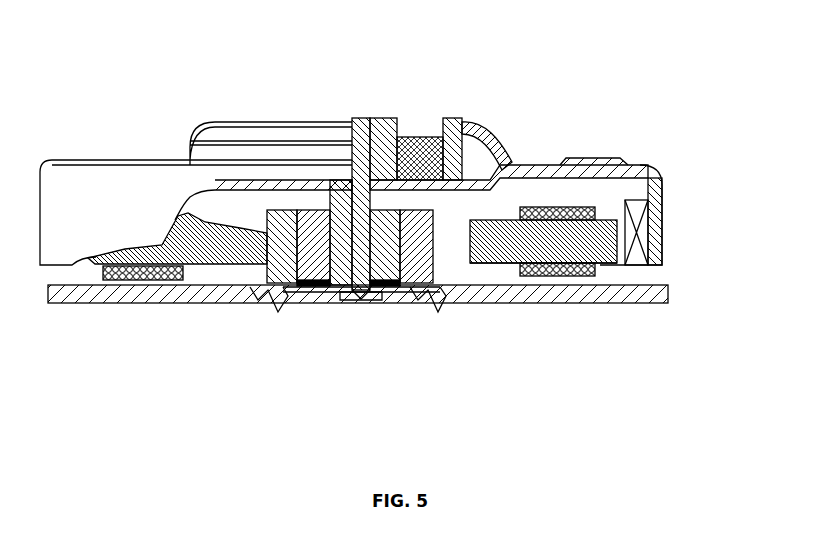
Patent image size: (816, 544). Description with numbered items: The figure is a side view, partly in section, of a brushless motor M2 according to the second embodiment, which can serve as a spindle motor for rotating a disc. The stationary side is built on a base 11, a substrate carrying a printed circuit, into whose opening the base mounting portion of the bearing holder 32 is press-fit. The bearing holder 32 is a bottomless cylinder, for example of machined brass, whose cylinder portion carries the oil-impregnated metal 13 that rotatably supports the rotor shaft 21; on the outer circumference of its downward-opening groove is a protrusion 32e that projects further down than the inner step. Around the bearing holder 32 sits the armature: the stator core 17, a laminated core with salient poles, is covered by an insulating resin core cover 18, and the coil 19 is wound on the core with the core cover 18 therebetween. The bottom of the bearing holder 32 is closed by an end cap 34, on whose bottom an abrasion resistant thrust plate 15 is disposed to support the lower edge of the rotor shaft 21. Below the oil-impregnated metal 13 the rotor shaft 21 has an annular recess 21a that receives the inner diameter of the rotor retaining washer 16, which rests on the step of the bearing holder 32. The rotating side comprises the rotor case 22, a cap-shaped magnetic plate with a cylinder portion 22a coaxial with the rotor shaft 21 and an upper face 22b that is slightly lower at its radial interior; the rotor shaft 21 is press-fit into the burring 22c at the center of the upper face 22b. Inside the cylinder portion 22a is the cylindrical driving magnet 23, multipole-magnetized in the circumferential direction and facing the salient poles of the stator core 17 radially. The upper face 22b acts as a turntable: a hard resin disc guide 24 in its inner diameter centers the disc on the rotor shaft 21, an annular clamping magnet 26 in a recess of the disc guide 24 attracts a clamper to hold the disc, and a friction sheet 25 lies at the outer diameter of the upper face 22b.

The brushless motor M2 is at (148, 138).
The disc guide 24 is at (243, 145).
The oil-impregnated metal 13 is at (313, 190).
The rotor shaft 21 is at (357, 122).
The burring 22c is at (423, 137).
The clamping magnet 26 is at (447, 115).
The upper face 22b is at (525, 165).
The friction sheet 25 is at (605, 160).
The rotor case 22 is at (665, 180).
The cylinder portion 22a is at (662, 225).
The driving magnet 23 is at (650, 245).
The base 11 is at (615, 303).
The coil 19 is at (553, 303).
The core cover 18 is at (500, 303).
The protrusion 32e is at (438, 303).
The thrust plate 15 is at (390, 303).
The annular recess 21a is at (355, 303).
The rotor retaining washer 16 is at (297, 300).
The bearing holder 32 is at (244, 303).
The stator core 17 is at (185, 303).
The end cap 34 is at (418, 303).